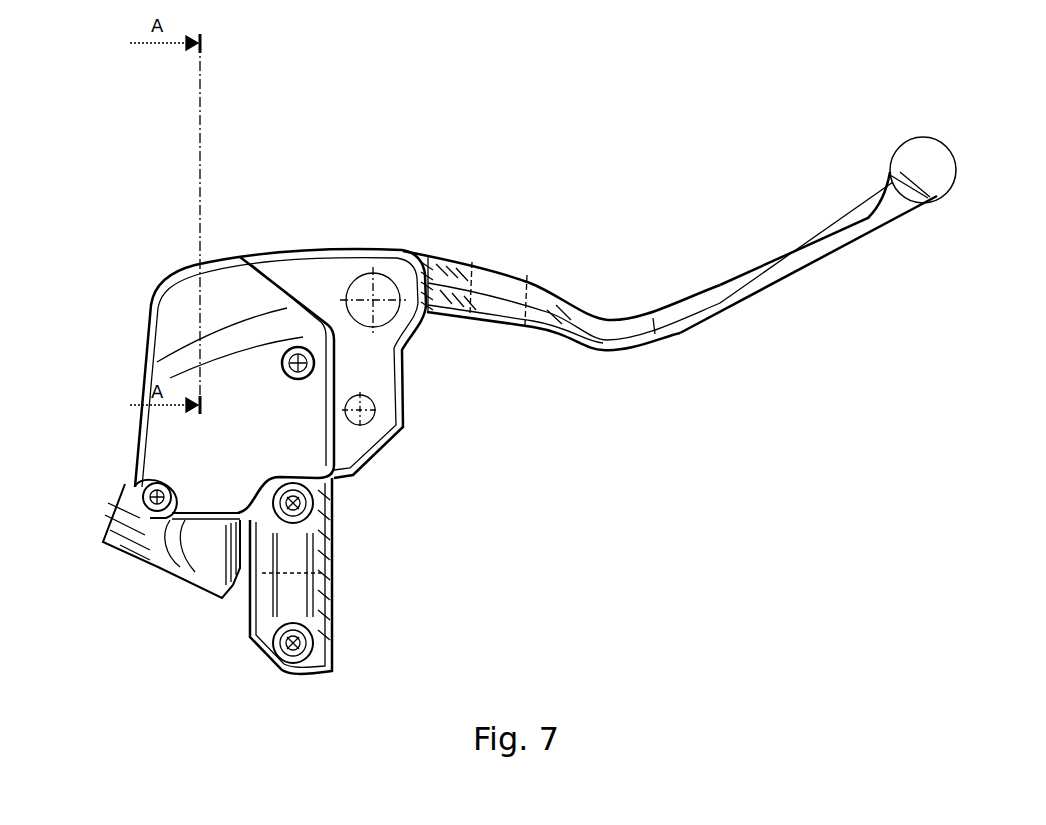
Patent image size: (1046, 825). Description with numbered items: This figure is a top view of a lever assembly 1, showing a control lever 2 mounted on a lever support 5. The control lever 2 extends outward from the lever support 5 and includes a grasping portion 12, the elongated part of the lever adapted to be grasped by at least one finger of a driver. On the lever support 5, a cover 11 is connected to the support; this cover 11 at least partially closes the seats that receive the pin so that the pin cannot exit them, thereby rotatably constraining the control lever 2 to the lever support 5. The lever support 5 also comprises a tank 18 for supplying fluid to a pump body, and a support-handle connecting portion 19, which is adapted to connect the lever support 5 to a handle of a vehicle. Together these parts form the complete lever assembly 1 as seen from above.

The lever assembly 1 is at (492, 177).
The control lever 2 is at (568, 310).
The lever support 5 is at (338, 275).
The cover 11 is at (257, 385).
The grasping portion 12 is at (714, 292).
The tank 18 is at (136, 432).
The support-handle connecting portion 19 is at (300, 553).